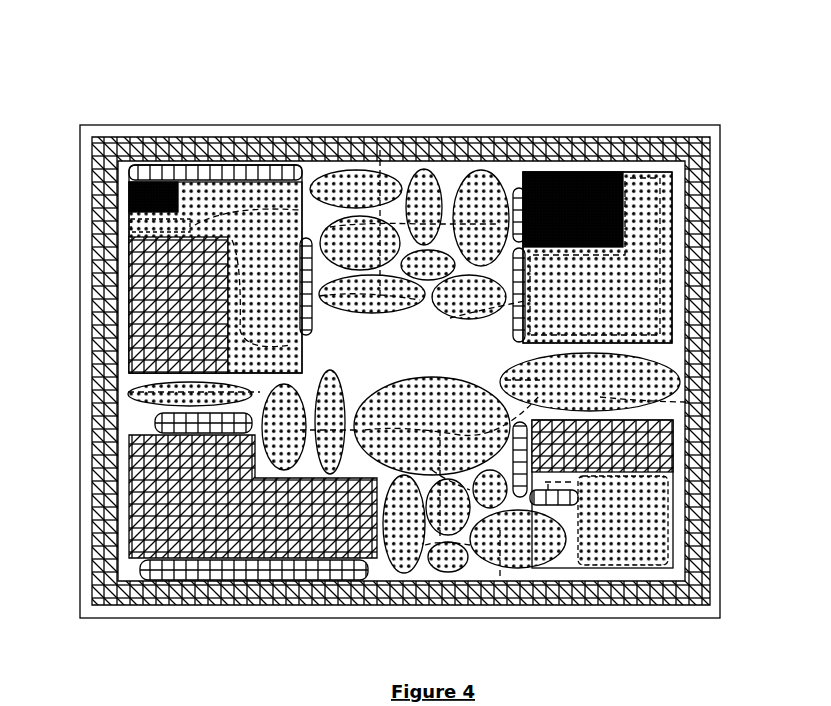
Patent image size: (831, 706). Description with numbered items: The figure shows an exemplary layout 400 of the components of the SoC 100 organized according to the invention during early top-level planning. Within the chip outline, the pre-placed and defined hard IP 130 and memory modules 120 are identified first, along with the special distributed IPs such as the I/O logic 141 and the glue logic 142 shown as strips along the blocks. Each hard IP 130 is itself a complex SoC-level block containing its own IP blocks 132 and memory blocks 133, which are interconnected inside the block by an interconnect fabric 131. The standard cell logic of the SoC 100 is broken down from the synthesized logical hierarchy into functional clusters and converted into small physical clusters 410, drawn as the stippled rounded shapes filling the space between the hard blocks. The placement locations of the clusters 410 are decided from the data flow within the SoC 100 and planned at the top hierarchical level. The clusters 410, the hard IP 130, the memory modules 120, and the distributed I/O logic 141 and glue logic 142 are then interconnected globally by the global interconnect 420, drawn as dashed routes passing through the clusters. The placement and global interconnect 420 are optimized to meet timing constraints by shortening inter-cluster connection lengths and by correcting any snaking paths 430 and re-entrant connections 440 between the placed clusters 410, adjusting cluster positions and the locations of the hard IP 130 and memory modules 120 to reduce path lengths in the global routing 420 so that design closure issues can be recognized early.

The SoC 100 is at (398, 122).
The memory module 120 is at (222, 560).
The hard IP 130 is at (215, 165).
The interconnect fabric 131 is at (198, 200).
The IP block 132 is at (128, 198).
The memory block 133 is at (130, 354).
The I/O logic 141 is at (128, 222).
The glue logic 142 is at (305, 238).
The exemplary layout 400 is at (607, 64).
The cluster 410 is at (365, 188).
The global interconnect 420 is at (150, 393).
The snaking path 430 is at (450, 222).
The re-entrant connection 440 is at (455, 318).